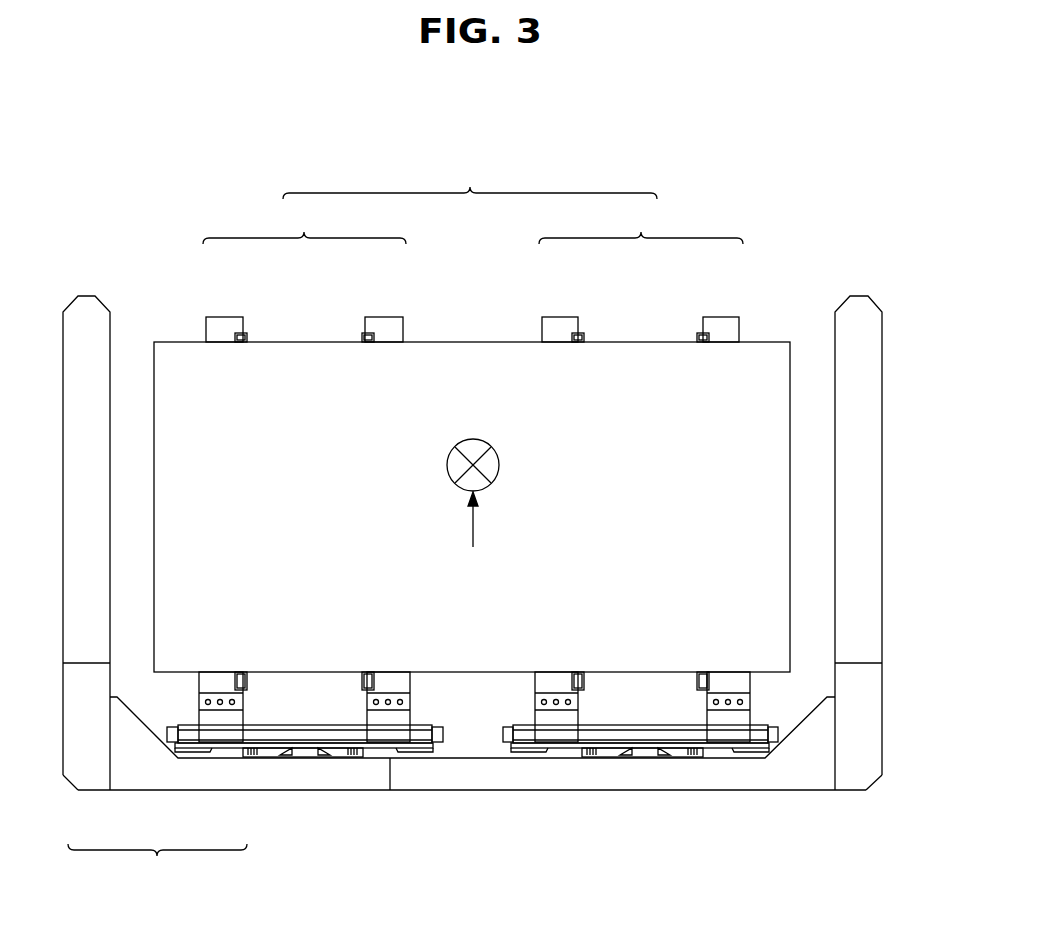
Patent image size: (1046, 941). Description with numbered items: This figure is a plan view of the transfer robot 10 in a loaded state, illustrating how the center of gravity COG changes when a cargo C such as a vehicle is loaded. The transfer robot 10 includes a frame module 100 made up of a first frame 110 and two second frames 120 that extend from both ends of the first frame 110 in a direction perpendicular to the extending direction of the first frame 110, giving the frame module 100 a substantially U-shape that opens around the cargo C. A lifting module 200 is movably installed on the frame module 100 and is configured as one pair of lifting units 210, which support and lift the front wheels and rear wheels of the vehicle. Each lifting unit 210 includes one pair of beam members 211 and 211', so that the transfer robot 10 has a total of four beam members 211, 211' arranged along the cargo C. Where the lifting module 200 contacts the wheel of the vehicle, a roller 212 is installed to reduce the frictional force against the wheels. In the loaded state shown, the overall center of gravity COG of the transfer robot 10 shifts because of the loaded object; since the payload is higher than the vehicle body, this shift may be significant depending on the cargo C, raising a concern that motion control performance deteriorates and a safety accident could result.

The transfer robot 10 is at (481, 816).
The frame module 100 is at (157, 865).
The first frame 110 is at (226, 765).
The second frames 120 is at (88, 750).
The lifting module 200 is at (470, 179).
The lifting unit 210 is at (473, 224).
The beam member 211 is at (550, 295).
The beam member 211' is at (395, 295).
The roller 212 is at (361, 680).
The cargo C is at (777, 342).
The center of gravity COG is at (453, 421).